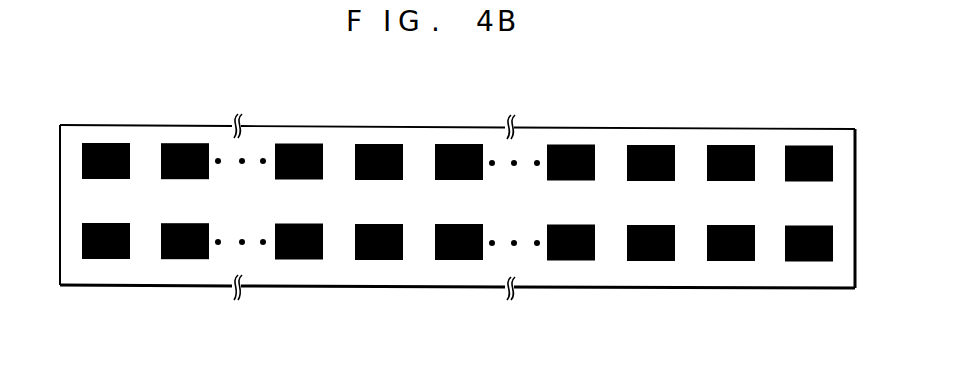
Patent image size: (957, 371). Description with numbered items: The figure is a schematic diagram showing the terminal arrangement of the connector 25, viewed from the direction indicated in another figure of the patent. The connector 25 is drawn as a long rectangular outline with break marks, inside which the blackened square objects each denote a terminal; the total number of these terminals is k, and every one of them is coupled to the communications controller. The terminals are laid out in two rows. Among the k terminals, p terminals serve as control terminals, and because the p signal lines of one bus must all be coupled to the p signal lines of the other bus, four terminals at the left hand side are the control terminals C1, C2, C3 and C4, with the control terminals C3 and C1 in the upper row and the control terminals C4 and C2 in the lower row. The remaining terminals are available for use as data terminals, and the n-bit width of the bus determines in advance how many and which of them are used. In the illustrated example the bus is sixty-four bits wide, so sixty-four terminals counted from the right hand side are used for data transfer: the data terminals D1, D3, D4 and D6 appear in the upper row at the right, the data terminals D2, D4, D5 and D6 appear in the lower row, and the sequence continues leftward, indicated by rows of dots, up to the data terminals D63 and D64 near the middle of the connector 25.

The connector 25 is at (118, 125).
The control terminal C1 is at (185, 175).
The control terminal C2 is at (185, 254).
The control terminal C3 is at (106, 175).
The control terminal C4 is at (106, 254).
The data terminal D1 is at (809, 178).
The data terminal D2 is at (809, 258).
The data terminal D3 is at (731, 177).
The data terminal D4 is at (691, 217).
The data terminal D5 is at (651, 257).
The data terminal D6 is at (571, 217).
The data terminal D63 is at (459, 176).
The data terminal D64 is at (459, 256).